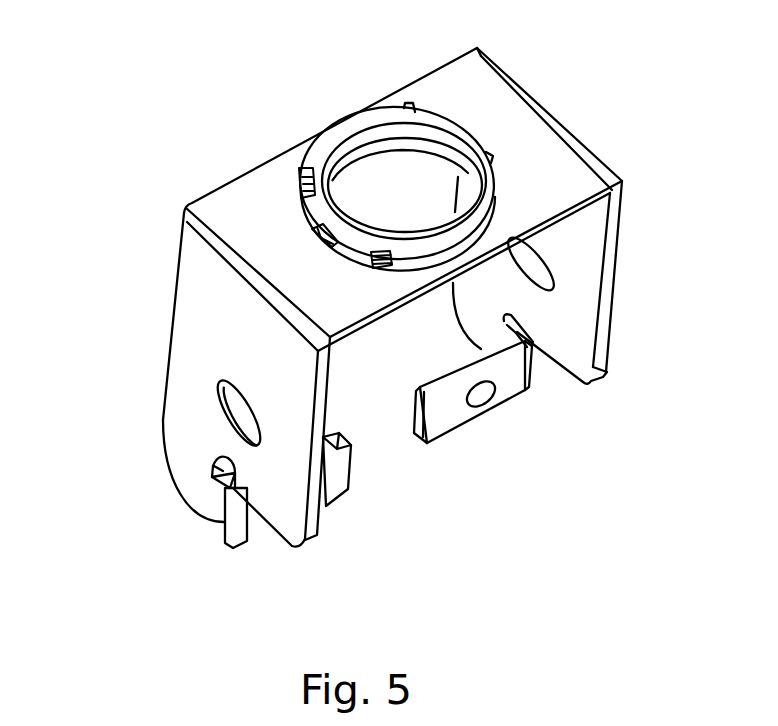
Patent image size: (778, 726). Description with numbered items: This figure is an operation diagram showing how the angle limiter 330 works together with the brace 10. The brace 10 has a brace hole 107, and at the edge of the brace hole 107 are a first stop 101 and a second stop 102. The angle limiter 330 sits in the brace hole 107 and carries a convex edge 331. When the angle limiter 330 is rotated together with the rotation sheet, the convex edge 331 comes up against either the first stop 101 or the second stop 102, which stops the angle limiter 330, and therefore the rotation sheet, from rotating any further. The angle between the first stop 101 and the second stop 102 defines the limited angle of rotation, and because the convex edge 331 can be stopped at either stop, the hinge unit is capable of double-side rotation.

The brace 10 is at (568, 167).
The first stop 101 is at (300, 181).
The second stop 102 is at (372, 256).
The brace hole 107 is at (370, 177).
The angle limiter 330 is at (447, 127).
The convex edge 331 is at (371, 177).